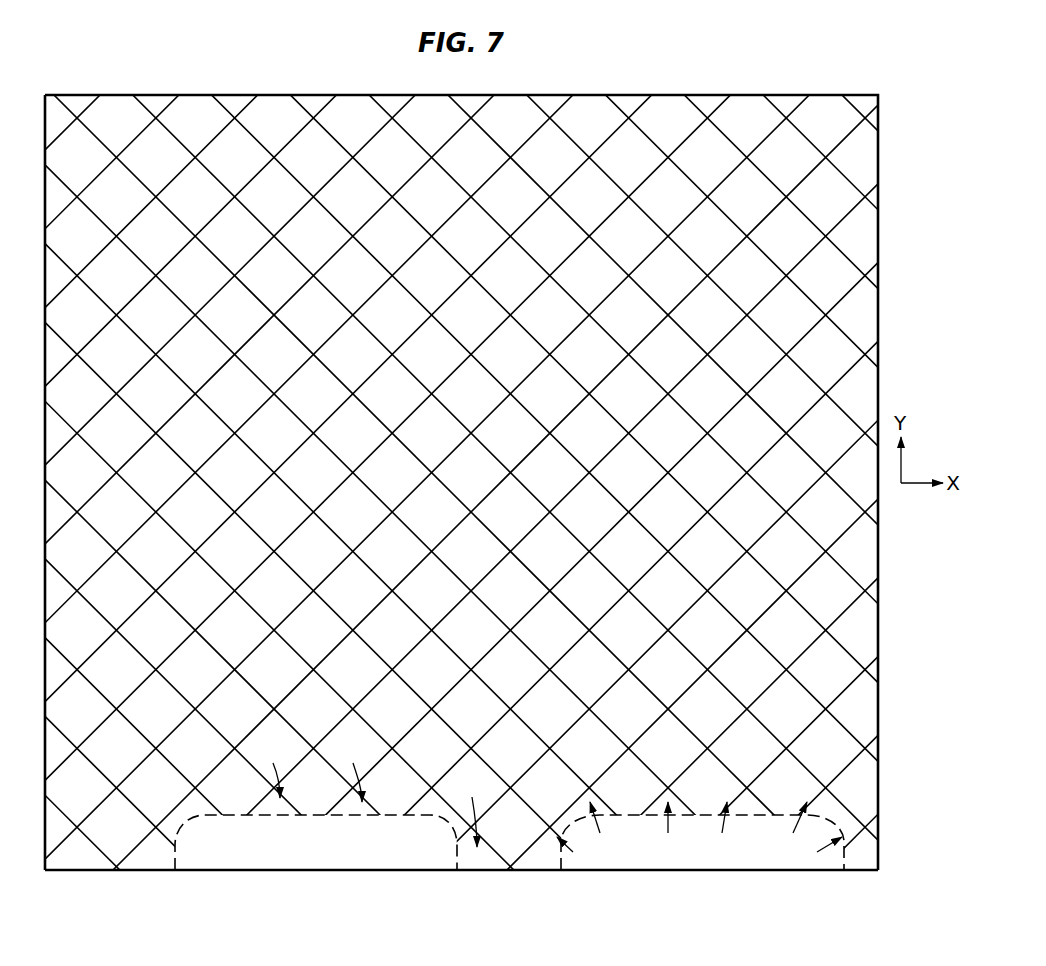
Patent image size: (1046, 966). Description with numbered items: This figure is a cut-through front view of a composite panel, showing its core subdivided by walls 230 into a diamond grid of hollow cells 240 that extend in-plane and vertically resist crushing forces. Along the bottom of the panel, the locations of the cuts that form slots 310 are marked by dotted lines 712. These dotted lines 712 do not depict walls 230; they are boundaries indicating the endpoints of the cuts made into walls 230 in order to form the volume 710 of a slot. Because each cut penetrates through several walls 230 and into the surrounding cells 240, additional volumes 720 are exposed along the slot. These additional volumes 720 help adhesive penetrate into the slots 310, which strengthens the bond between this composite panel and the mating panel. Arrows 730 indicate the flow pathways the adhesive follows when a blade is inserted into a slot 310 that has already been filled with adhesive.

The walls 230 is at (330, 210).
The cells 240 is at (237, 395).
The slots 310 is at (228, 872).
The volume 710 is at (320, 849).
The dotted lines 712 is at (430, 817).
The additional volumes 720 is at (192, 805).
The arrows 730 is at (725, 823).